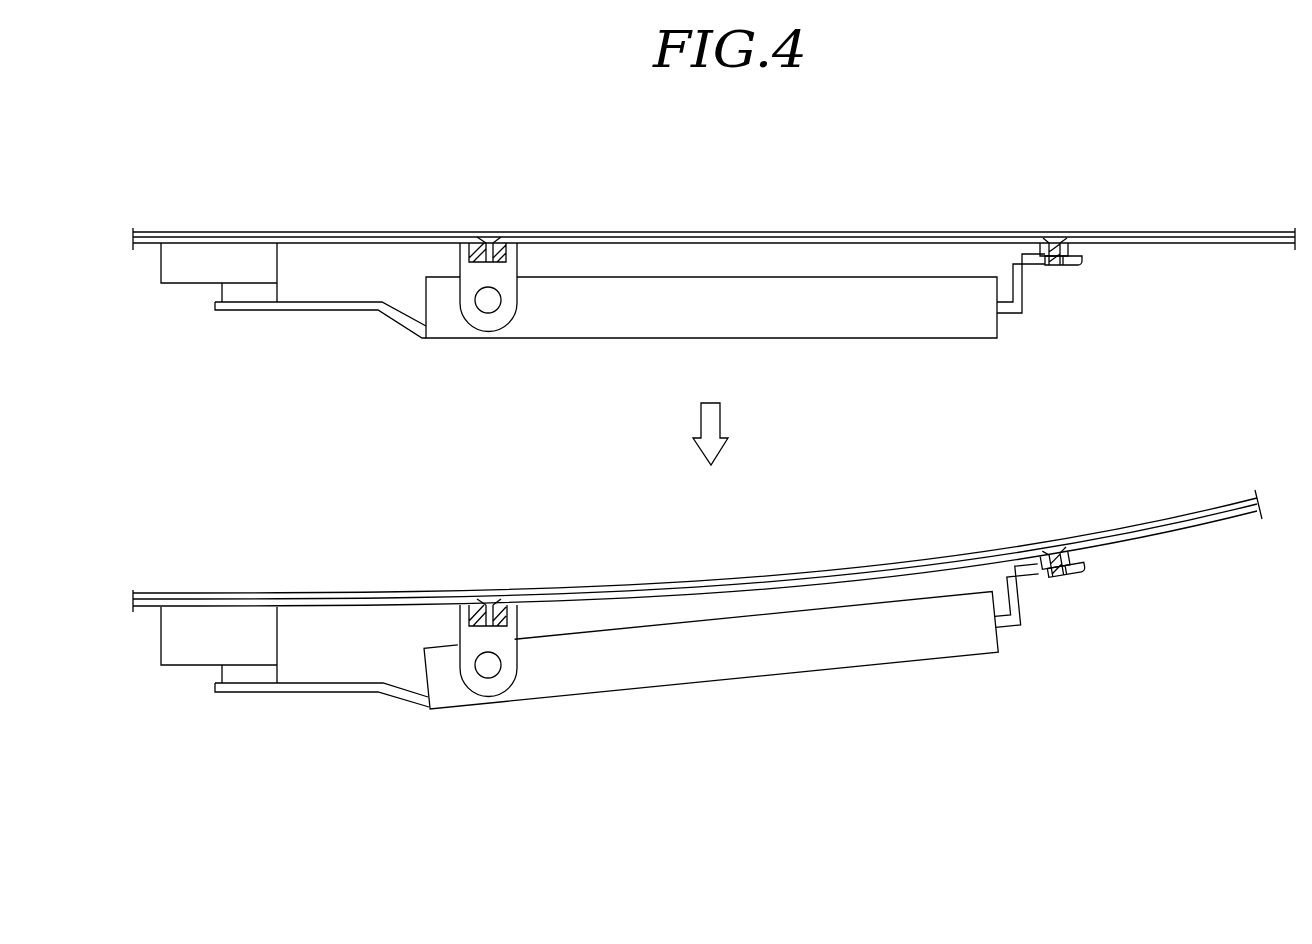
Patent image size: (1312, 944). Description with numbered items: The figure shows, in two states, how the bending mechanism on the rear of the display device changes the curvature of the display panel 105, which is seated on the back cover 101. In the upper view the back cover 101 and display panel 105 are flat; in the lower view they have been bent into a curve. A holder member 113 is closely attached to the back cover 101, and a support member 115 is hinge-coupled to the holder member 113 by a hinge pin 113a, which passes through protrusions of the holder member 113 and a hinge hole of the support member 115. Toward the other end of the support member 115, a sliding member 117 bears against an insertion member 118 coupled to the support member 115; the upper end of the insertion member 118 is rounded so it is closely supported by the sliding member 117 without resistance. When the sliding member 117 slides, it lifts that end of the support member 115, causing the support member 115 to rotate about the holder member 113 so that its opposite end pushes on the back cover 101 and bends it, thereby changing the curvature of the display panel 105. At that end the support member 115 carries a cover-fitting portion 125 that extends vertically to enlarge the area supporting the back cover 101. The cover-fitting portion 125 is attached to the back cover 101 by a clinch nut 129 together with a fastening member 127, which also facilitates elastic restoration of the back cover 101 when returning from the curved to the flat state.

The back cover 101 is at (1232, 242).
The display panel 105 is at (1205, 230).
The holder member 113 is at (513, 292).
The hinge pin 113a is at (488, 305).
The support member 115 is at (948, 325).
The sliding member 117 is at (175, 250).
The insertion member 118 is at (236, 293).
The cover-fitting portion 125 is at (1072, 263).
The fastening member 127 is at (482, 243).
The clinch nut 129 is at (497, 242).